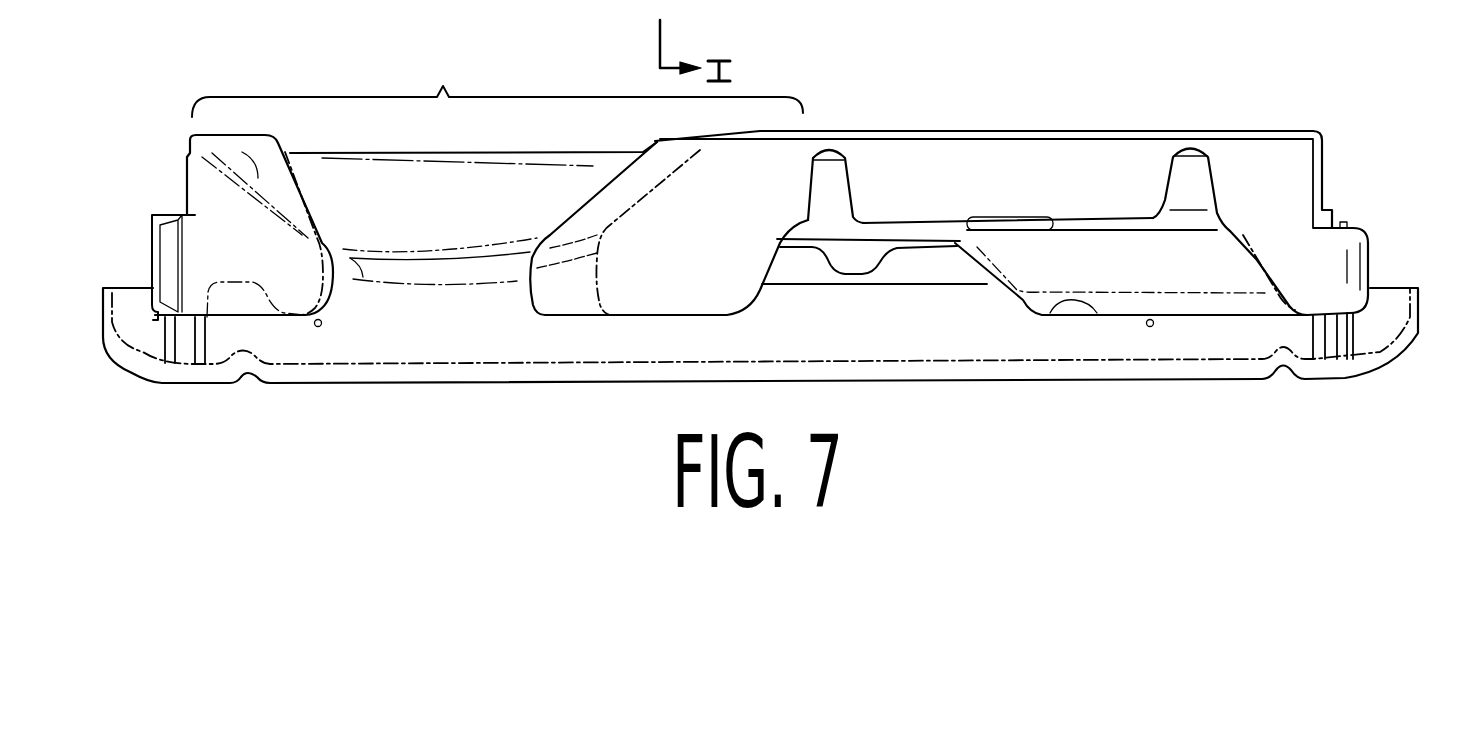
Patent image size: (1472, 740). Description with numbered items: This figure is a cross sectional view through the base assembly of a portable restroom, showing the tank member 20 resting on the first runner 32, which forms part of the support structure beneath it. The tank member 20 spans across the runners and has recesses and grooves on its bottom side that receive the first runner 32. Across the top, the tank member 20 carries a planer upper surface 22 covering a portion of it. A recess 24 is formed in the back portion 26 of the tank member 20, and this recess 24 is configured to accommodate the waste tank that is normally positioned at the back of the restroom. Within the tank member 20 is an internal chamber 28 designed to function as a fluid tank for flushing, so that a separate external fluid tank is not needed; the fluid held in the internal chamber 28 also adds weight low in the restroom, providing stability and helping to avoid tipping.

The tank member 20 is at (910, 160).
The planer upper surface 22 is at (1073, 130).
The recess 24 is at (467, 218).
The back portion 26 is at (497, 81).
The internal chamber 28 is at (257, 255).
The first runner 32 is at (1380, 303).